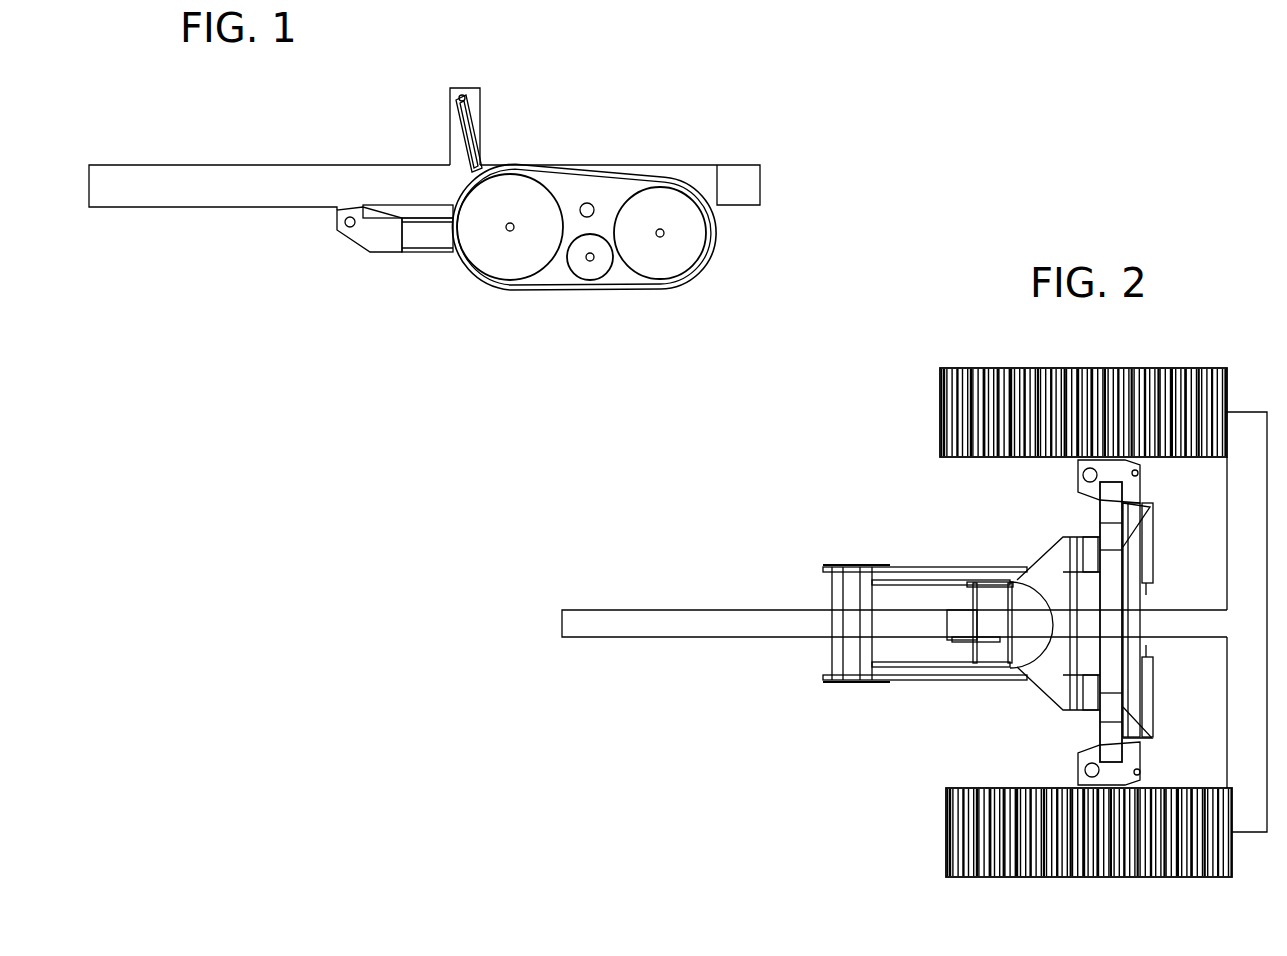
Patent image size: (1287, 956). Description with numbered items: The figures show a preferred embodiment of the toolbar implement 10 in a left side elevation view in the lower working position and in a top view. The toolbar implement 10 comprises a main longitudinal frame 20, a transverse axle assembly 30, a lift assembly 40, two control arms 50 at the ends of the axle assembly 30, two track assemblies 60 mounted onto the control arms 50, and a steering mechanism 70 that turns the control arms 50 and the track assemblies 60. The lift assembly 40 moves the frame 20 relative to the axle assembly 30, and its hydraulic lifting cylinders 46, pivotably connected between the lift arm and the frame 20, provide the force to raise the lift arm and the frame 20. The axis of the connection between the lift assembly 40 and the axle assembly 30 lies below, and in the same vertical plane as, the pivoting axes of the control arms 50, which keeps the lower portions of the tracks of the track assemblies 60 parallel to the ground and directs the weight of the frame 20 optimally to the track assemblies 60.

In FIG. 1, the toolbar implement 10 is at (268, 124).
In FIG. 1, the main longitudinal frame 20 is at (241, 208).
In FIG. 2, the main longitudinal frame 20 is at (681, 608).
In FIG. 2, the transverse axle assembly 30 is at (1100, 716).
In FIG. 1, the lift assembly 40 is at (389, 254).
In FIG. 1, the hydraulic lifting cylinders 46 is at (487, 137).
In FIG. 2, the control arms 50 is at (1080, 483).
In FIG. 1, the track assemblies 60 is at (690, 283).
In FIG. 2, the track assemblies 60 is at (945, 828).
In FIG. 2, the steering mechanism 70 is at (1162, 548).